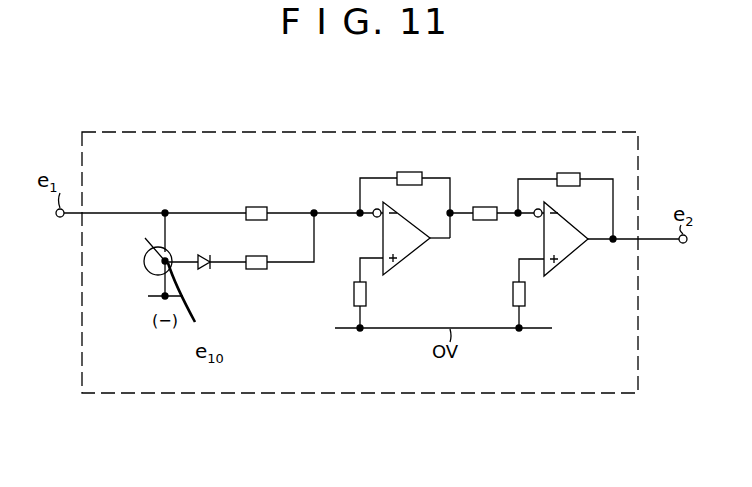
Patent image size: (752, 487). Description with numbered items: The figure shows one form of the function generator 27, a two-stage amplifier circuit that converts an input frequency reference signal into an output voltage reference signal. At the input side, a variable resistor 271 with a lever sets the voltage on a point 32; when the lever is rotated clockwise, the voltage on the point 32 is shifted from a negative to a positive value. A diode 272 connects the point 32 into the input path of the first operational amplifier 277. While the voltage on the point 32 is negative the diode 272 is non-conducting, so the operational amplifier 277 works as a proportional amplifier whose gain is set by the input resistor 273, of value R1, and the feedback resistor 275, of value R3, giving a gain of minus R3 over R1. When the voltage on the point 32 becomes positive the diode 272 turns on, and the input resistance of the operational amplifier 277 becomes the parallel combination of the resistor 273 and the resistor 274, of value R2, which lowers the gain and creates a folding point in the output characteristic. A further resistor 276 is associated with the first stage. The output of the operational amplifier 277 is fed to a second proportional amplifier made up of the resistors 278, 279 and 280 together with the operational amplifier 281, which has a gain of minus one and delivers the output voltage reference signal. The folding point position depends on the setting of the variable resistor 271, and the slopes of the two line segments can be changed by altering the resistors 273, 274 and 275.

The function generator 27 is at (475, 131).
The point 32 is at (194, 304).
The variable resistor 271 is at (147, 270).
The diode 272 is at (203, 268).
The resistor 273 is at (250, 206).
The resistor 274 is at (257, 270).
The resistor 275 is at (407, 161).
The resistor 276 is at (366, 290).
The operational amplifier 277 is at (419, 250).
The resistor 278 is at (487, 199).
The resistor 279 is at (568, 173).
The resistor 280 is at (525, 296).
The operational amplifier 281 is at (575, 252).